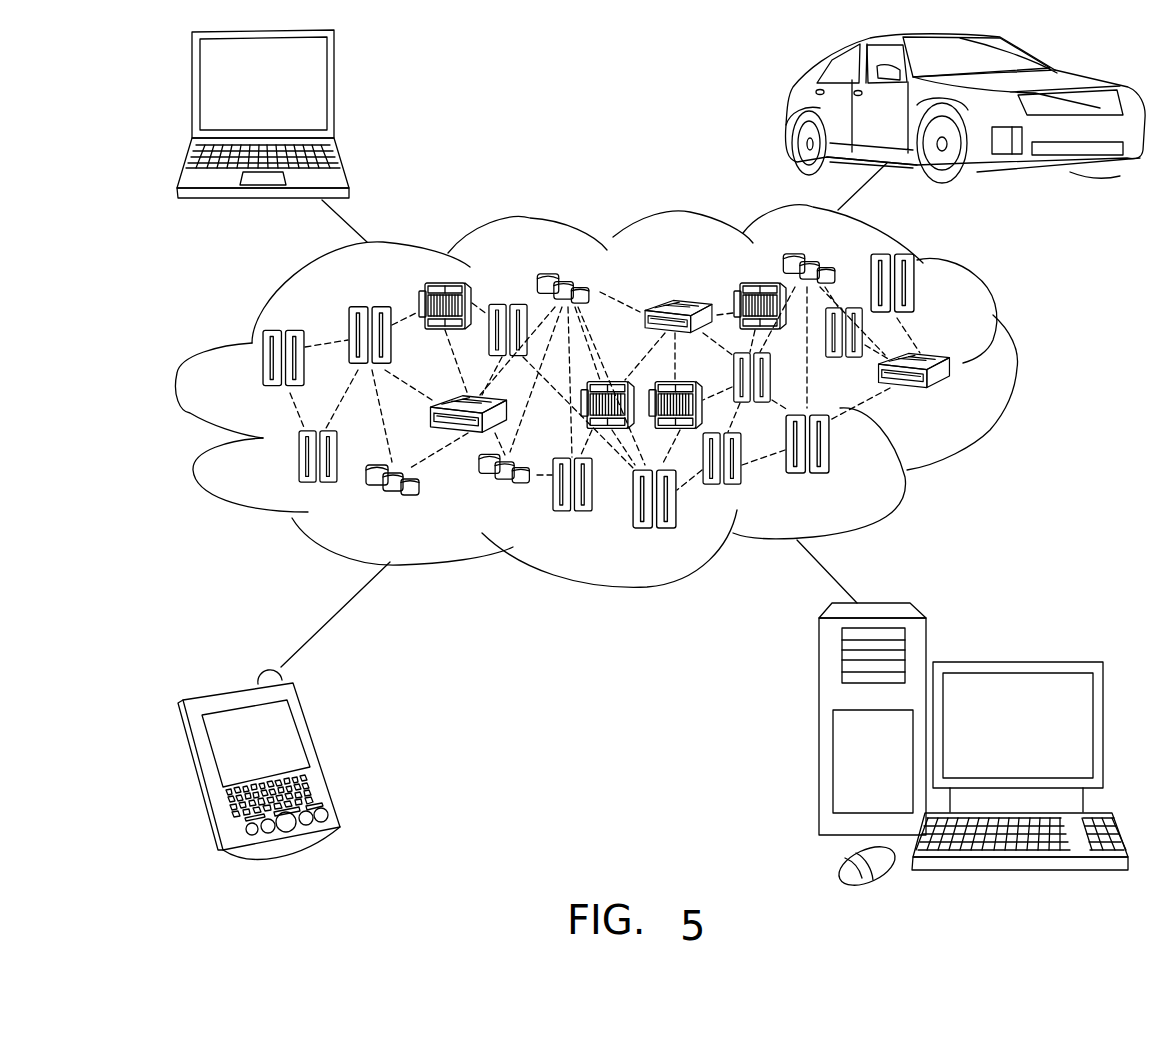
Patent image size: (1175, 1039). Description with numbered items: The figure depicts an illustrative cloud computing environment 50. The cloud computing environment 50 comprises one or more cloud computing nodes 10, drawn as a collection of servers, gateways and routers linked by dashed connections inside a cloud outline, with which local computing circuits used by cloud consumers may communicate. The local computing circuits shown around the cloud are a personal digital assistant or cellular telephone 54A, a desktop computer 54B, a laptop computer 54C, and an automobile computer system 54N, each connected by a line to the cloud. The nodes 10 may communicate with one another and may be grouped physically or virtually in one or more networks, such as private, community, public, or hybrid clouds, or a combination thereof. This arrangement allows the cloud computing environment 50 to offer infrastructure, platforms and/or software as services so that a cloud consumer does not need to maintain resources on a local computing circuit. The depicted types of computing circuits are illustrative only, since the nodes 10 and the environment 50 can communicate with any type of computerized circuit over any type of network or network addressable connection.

The cloud computing nodes 10 is at (960, 402).
The cloud computing environment 50 is at (1017, 368).
The personal digital assistant or cellular telephone 54A is at (323, 756).
The desktop computer 54B is at (1015, 662).
The laptop computer 54C is at (335, 92).
The automobile computer system 54N is at (788, 108).